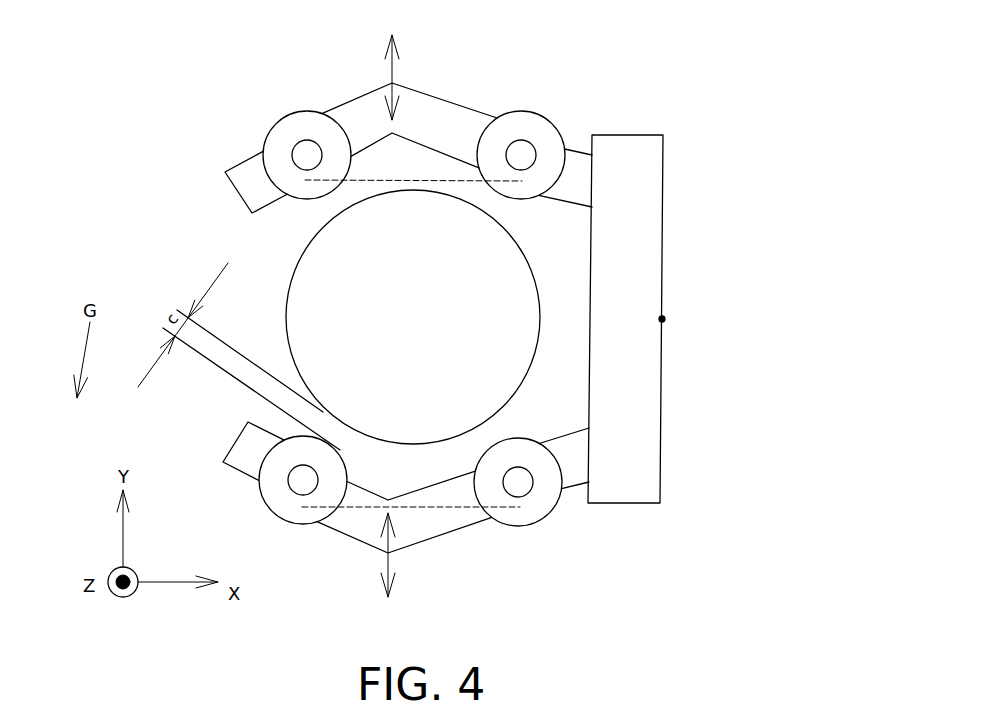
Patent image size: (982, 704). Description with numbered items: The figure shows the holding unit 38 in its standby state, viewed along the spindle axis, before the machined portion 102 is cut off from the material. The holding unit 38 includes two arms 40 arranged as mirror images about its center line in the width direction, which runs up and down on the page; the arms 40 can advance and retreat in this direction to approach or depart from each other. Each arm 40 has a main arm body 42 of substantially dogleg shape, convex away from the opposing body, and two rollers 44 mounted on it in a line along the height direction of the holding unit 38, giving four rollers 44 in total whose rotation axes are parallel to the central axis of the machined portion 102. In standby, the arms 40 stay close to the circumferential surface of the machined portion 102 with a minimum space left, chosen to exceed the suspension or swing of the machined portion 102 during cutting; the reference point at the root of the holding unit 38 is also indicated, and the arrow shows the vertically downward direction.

The holding unit 38 is at (678, 290).
The arm 40 is at (426, 330).
The main arm body 42 is at (443, 118).
The roller 44 is at (293, 112).
The machined portion 102 is at (427, 327).